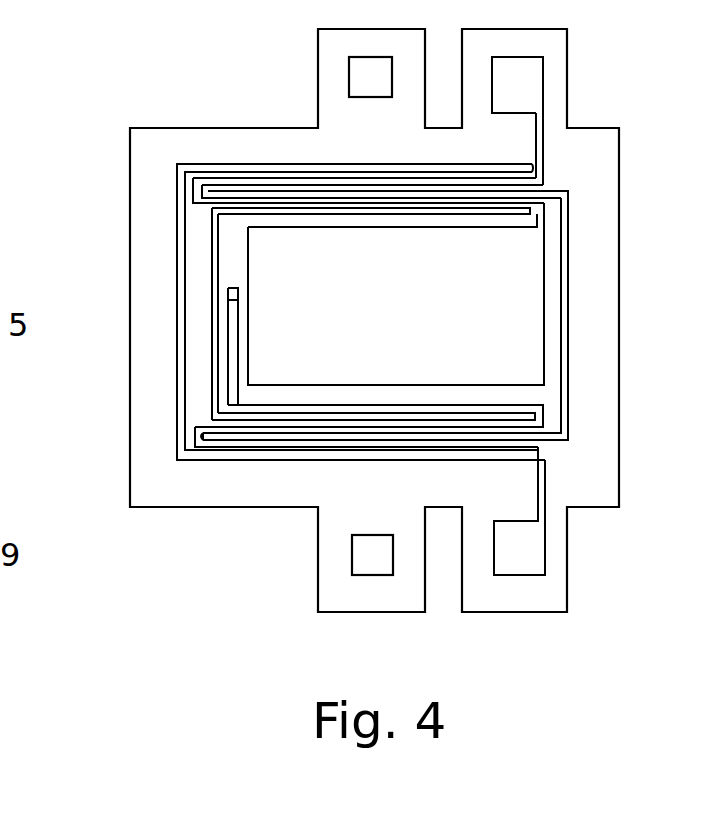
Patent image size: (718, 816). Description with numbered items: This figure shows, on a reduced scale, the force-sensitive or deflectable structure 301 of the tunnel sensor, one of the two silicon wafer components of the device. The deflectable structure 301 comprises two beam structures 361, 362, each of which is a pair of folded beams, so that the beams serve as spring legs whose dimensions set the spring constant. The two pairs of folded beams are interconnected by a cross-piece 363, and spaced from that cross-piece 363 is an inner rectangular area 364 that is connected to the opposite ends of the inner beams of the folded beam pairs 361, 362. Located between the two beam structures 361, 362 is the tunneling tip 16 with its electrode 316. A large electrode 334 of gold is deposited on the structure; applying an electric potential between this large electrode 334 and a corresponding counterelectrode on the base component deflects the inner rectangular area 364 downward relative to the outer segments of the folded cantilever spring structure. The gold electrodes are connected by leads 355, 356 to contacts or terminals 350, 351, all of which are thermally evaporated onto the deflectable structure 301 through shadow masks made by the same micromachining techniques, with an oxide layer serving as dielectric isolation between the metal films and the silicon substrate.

The deflectable structure 301 is at (135, 410).
The contact 350 is at (532, 548).
The contact 351 is at (532, 76).
The lead 355 is at (197, 440).
The lead 356 is at (190, 170).
The beam structure 361 is at (262, 455).
The beam structure 362 is at (208, 180).
The cross-piece 363 is at (200, 375).
The inner rectangular area 364 is at (203, 200).
The large electrode 334 is at (262, 258).
The electrode 316 is at (222, 292).
The tunneling tip 16 is at (235, 303).